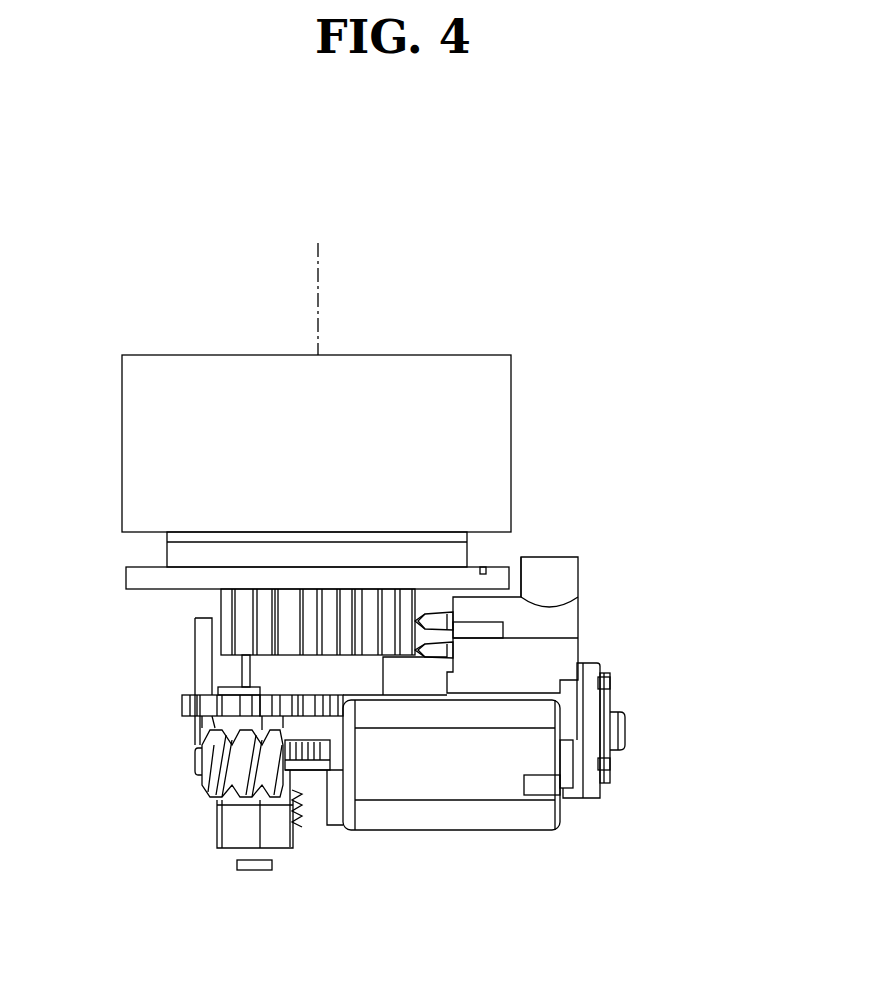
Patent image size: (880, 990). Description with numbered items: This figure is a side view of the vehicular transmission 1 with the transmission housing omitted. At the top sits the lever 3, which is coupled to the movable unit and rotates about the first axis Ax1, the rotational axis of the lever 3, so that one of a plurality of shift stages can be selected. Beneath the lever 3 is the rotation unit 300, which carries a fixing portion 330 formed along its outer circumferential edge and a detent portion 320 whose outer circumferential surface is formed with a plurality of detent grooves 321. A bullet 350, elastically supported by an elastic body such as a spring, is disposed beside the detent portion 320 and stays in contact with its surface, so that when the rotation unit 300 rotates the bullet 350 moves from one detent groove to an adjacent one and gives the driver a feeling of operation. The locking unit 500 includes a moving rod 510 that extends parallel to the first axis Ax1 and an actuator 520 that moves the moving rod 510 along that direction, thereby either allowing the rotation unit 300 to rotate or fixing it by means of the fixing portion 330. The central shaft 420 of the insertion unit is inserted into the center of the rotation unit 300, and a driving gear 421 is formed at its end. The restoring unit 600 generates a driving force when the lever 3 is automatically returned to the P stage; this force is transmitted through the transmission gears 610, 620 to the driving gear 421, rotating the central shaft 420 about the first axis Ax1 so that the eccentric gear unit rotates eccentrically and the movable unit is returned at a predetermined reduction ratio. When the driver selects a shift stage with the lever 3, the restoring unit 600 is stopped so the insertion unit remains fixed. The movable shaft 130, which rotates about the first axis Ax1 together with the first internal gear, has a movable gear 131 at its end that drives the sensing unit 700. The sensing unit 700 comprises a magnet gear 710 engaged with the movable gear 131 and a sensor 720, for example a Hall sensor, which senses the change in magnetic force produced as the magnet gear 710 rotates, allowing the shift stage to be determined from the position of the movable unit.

The vehicular transmission 1 is at (597, 270).
The first axis Ax1 is at (319, 284).
The lever 3 is at (493, 403).
The rotation unit 300 is at (324, 529).
The fixing portion 330 is at (202, 576).
The detent grooves 321 is at (242, 612).
The detent portion 320 is at (205, 597).
The bullet 350 is at (430, 626).
The locking unit 500 is at (641, 718).
The actuator 520 is at (585, 707).
The restoring unit 600 is at (483, 783).
The moving rod 510 is at (213, 642).
The central shaft 420 is at (267, 670).
The driving gear 421 is at (323, 705).
The transmission gear 620 is at (192, 707).
The transmission gear 610 is at (210, 767).
The movable shaft 130 is at (341, 816).
The movable gear 131 is at (307, 753).
The sensing unit 700 is at (171, 845).
The magnet gear 710 is at (225, 833).
The sensor 720 is at (245, 866).